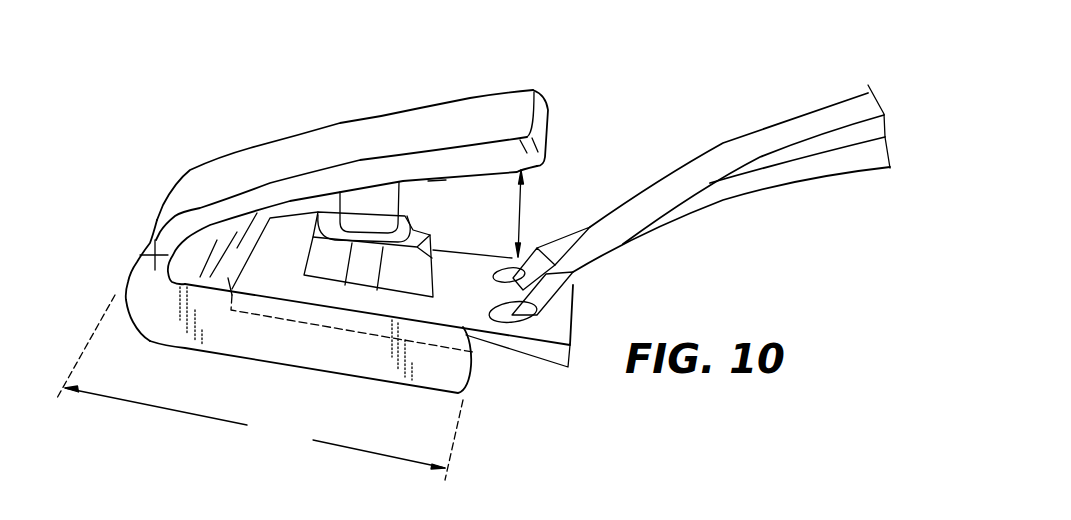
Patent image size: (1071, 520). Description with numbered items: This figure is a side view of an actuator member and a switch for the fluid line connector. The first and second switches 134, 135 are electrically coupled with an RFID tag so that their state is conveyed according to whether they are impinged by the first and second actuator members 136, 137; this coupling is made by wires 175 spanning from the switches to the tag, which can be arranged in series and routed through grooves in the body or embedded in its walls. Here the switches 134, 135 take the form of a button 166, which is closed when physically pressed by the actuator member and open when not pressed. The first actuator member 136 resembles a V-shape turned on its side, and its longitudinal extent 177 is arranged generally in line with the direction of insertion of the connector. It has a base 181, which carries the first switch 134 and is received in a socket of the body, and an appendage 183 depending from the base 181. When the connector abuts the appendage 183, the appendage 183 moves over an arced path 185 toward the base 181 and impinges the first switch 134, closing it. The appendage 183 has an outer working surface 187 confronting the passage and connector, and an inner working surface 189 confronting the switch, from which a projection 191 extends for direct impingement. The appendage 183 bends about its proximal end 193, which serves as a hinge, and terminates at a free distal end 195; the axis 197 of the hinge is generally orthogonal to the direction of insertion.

The first switch 134 is at (350, 316).
The second switch 135 is at (361, 316).
The first actuator member 136 is at (391, 150).
The second actuator member 137 is at (391, 167).
The button 166 is at (400, 243).
The wires 175 is at (767, 123).
The longitudinal extent 177 is at (260, 387).
The base 181 is at (346, 350).
The appendage 183 is at (363, 170).
The arced path 185 is at (522, 211).
The outer working surface 187 is at (345, 165).
The inner working surface 189 is at (433, 175).
The projection 191 is at (385, 207).
The proximal end 193 is at (157, 223).
The distal end 195 is at (540, 117).
The axis 197 is at (147, 241).